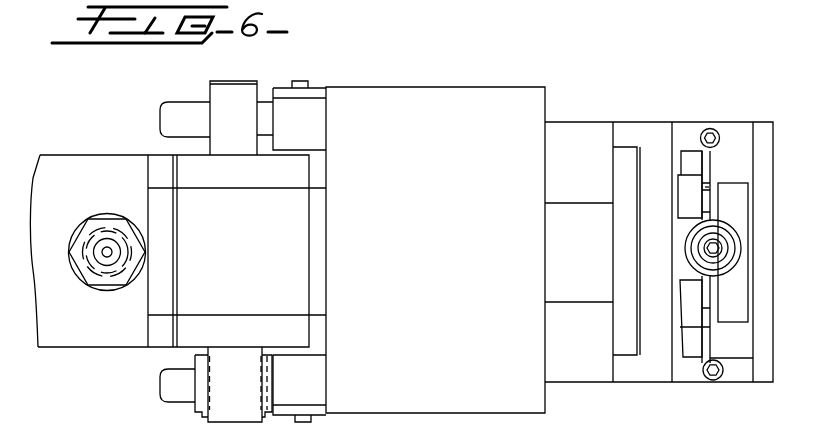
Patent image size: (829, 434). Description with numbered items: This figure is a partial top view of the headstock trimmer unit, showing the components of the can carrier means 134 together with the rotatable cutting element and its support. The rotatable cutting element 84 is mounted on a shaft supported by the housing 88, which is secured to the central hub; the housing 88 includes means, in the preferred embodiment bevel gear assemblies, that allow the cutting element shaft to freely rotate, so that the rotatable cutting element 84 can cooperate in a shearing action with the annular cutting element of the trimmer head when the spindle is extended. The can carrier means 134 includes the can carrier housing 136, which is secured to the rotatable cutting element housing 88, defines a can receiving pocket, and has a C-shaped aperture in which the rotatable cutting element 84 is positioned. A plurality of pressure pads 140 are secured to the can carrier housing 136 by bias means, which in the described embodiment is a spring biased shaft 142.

The rotatable cutting element 84 is at (687, 238).
The housing 88 is at (688, 137).
The can carrier means 134 is at (706, 114).
The can carrier housing 136 is at (700, 282).
The pressure pads 140 is at (683, 168).
The spring biased shaft 142 is at (705, 187).